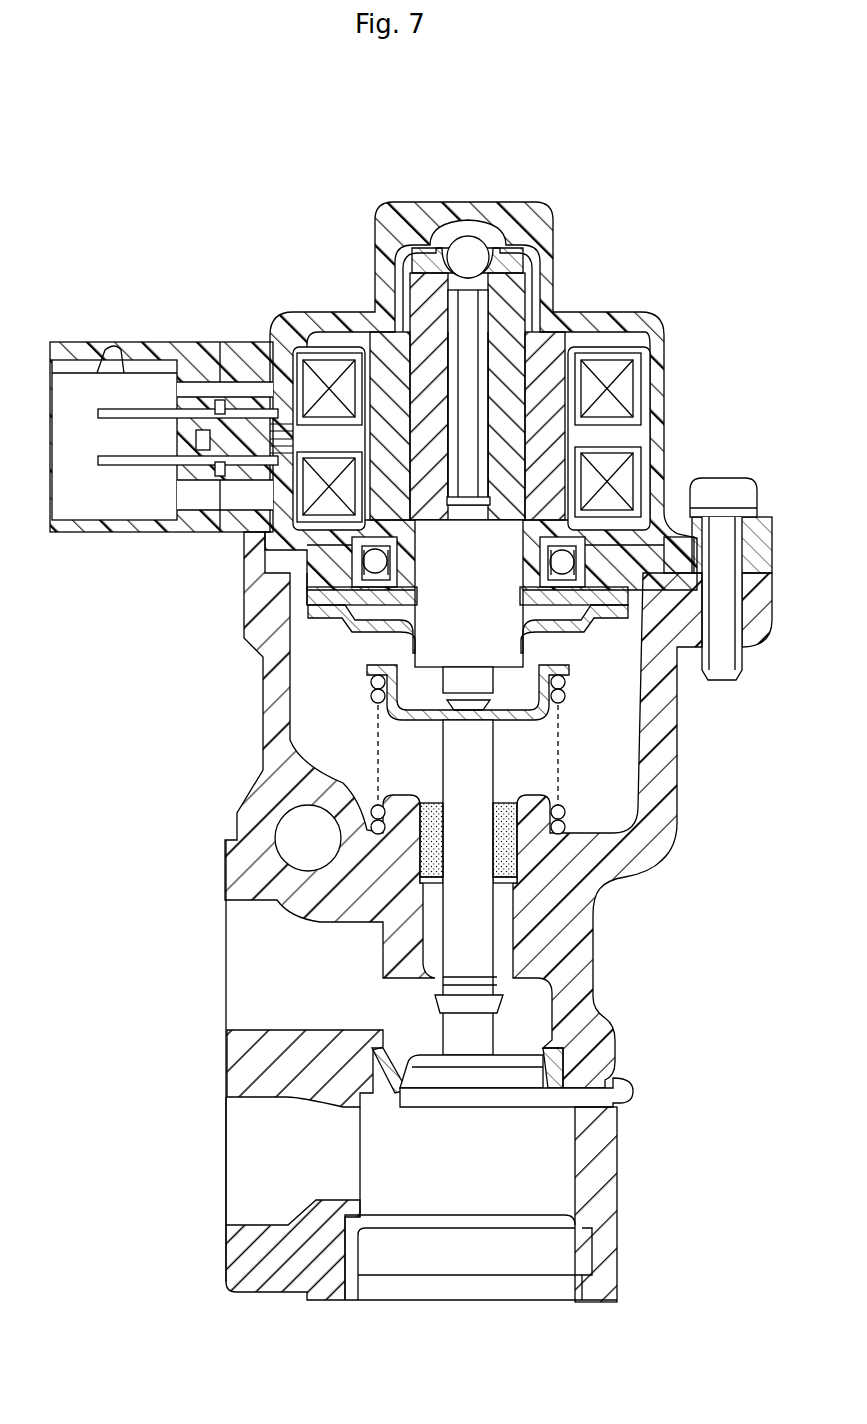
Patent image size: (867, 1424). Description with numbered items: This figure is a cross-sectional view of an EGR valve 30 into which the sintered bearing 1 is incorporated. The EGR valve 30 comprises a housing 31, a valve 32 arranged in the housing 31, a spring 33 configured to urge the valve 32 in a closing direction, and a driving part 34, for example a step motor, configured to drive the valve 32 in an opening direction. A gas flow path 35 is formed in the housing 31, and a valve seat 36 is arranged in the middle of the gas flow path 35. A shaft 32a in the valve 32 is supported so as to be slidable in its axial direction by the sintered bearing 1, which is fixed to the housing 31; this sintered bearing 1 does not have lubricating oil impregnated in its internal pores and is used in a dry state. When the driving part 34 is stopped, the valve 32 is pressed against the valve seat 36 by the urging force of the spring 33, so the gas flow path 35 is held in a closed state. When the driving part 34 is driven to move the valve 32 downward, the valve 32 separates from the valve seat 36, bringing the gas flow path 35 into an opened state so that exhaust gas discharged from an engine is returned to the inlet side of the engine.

The EGR valve 30 is at (352, 196).
The driving part 34 is at (652, 362).
The housing 31 is at (595, 955).
The spring 33 is at (372, 690).
The shaft 32a is at (472, 765).
The sintered bearing 1 is at (505, 847).
The valve seat 36 is at (562, 1066).
The valve 32 is at (487, 1103).
The gas flow path 35 is at (383, 1150).